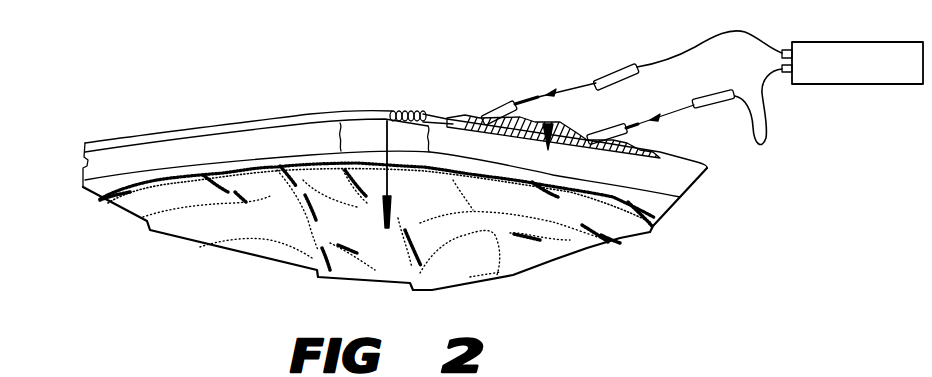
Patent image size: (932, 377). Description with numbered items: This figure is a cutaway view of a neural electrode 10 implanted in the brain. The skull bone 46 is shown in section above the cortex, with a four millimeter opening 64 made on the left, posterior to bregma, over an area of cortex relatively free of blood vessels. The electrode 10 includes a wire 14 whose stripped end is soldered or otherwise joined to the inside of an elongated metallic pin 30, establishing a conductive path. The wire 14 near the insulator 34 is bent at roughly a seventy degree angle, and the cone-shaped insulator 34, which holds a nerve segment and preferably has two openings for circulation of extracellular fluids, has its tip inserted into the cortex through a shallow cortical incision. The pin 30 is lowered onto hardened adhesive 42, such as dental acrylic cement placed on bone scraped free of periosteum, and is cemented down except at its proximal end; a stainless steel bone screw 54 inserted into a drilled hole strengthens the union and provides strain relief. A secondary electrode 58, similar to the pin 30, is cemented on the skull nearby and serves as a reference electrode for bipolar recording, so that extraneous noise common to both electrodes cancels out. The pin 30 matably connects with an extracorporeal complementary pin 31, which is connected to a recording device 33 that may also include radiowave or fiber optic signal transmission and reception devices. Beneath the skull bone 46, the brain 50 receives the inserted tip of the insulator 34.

The electrode 10 is at (443, 95).
The wire 14 is at (398, 111).
The pin 30 is at (509, 103).
The complementary pin 31 is at (605, 76).
The recording device 33 is at (843, 41).
The insulator 34 is at (392, 207).
The hardened adhesive 42 is at (643, 148).
The skull bone 46 is at (173, 150).
The brain 50 is at (127, 199).
The bone screw 54 is at (550, 126).
The secondary electrode 58 is at (612, 123).
The opening 64 is at (366, 130).